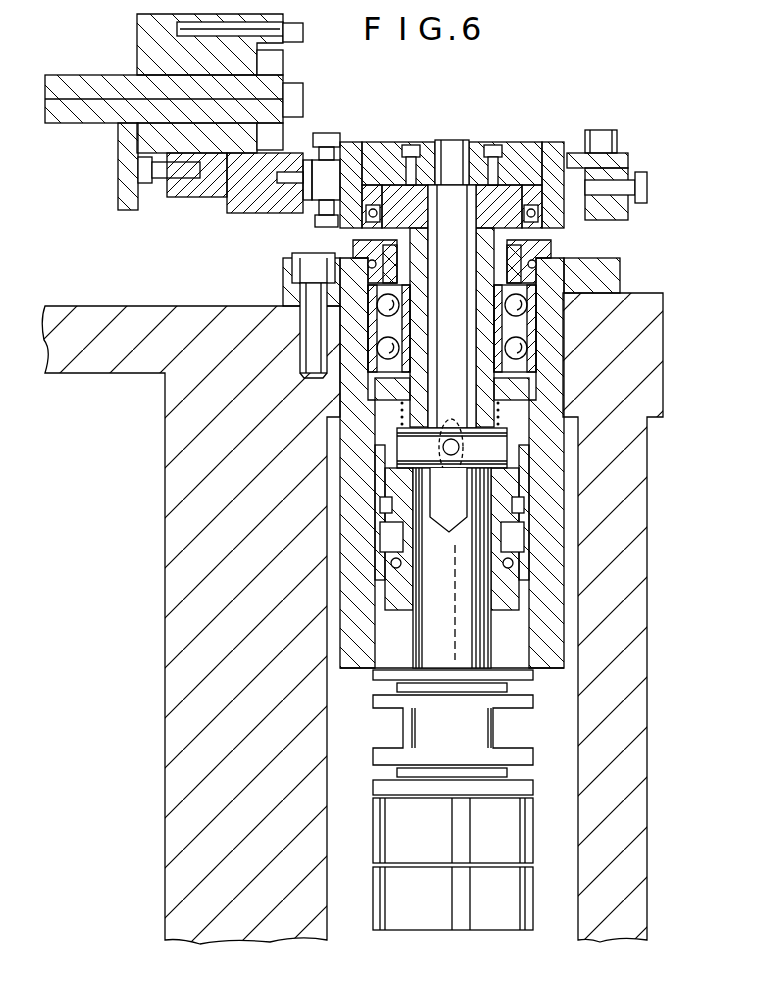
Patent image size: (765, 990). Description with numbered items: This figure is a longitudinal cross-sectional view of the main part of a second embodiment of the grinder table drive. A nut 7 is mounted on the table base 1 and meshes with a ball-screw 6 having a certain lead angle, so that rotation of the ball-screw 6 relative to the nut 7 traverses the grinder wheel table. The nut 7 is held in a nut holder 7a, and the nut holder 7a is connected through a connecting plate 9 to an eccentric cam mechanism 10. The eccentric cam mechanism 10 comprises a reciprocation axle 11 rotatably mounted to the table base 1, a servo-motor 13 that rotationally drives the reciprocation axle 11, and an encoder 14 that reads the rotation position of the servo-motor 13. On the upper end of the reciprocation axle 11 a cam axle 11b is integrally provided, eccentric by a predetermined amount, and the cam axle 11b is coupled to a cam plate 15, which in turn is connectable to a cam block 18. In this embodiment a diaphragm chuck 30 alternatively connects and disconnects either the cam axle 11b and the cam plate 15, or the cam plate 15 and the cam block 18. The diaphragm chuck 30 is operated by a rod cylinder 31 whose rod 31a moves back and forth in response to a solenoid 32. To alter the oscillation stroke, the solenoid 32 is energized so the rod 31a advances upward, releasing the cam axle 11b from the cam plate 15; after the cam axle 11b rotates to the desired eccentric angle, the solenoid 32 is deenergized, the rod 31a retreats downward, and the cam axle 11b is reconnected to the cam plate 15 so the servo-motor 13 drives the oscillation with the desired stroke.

The table base 1 is at (178, 522).
The ball-screw 6 is at (82, 125).
The nut 7 is at (140, 32).
The nut holder 7a is at (278, 60).
The connecting plate 9 is at (178, 192).
The eccentric cam mechanism 10 is at (470, 135).
The reciprocation axle 11 is at (487, 638).
The cam axle 11b is at (397, 234).
The servo-motor 13 is at (520, 838).
The encoder 14 is at (522, 908).
The cam plate 15 is at (513, 231).
The cam block 18 is at (352, 142).
The diaphragm chuck 30 is at (510, 180).
The rod cylinder 31 is at (463, 325).
The rod 31a is at (440, 138).
The solenoid 32 is at (500, 445).